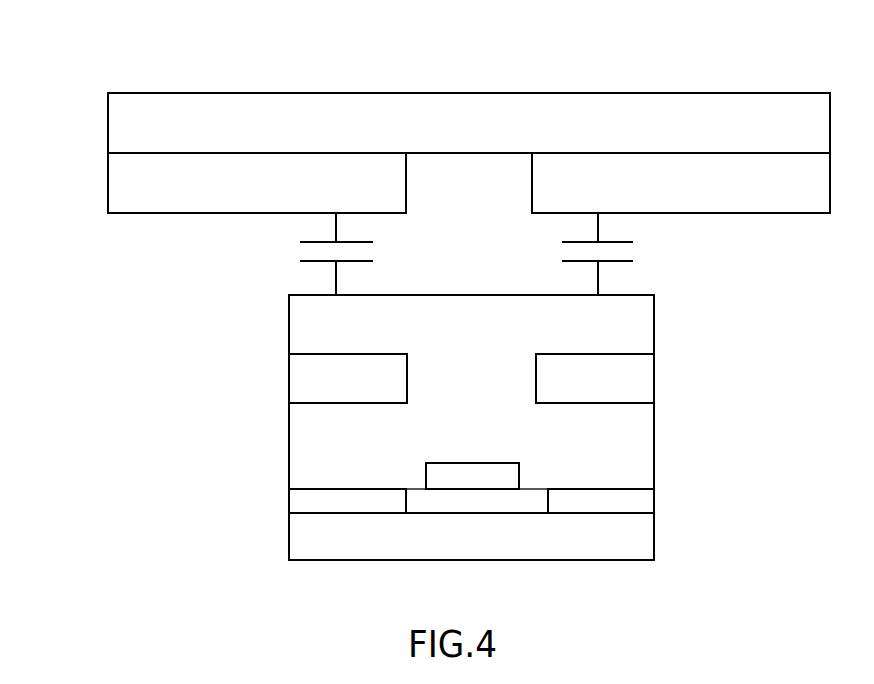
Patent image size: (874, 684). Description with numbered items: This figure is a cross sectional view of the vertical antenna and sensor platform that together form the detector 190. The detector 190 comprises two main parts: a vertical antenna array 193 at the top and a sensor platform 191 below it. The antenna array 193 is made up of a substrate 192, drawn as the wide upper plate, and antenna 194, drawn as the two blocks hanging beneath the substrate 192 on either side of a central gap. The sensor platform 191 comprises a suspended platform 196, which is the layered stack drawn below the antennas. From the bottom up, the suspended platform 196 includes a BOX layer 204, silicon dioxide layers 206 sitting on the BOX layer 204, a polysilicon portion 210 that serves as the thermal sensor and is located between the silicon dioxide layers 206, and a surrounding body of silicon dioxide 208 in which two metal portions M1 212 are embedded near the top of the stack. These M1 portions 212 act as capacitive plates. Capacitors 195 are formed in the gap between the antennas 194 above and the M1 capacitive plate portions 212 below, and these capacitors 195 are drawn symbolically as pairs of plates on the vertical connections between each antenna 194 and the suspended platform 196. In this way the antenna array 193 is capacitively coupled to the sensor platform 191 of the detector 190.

The detector 190 is at (210, 528).
The sensor platform 191 is at (287, 538).
The substrate 192 is at (491, 93).
The vertical antenna array 193 is at (106, 135).
The antenna 194 is at (188, 213).
The capacitors 195 is at (316, 262).
The suspended platform 196 is at (488, 291).
The BOX layer 204 is at (628, 547).
The silicon dioxide layers 206 is at (296, 500).
The silicon dioxide 208 is at (314, 432).
The polysilicon portion 210 is at (487, 463).
The metal portion M1 212 is at (316, 353).